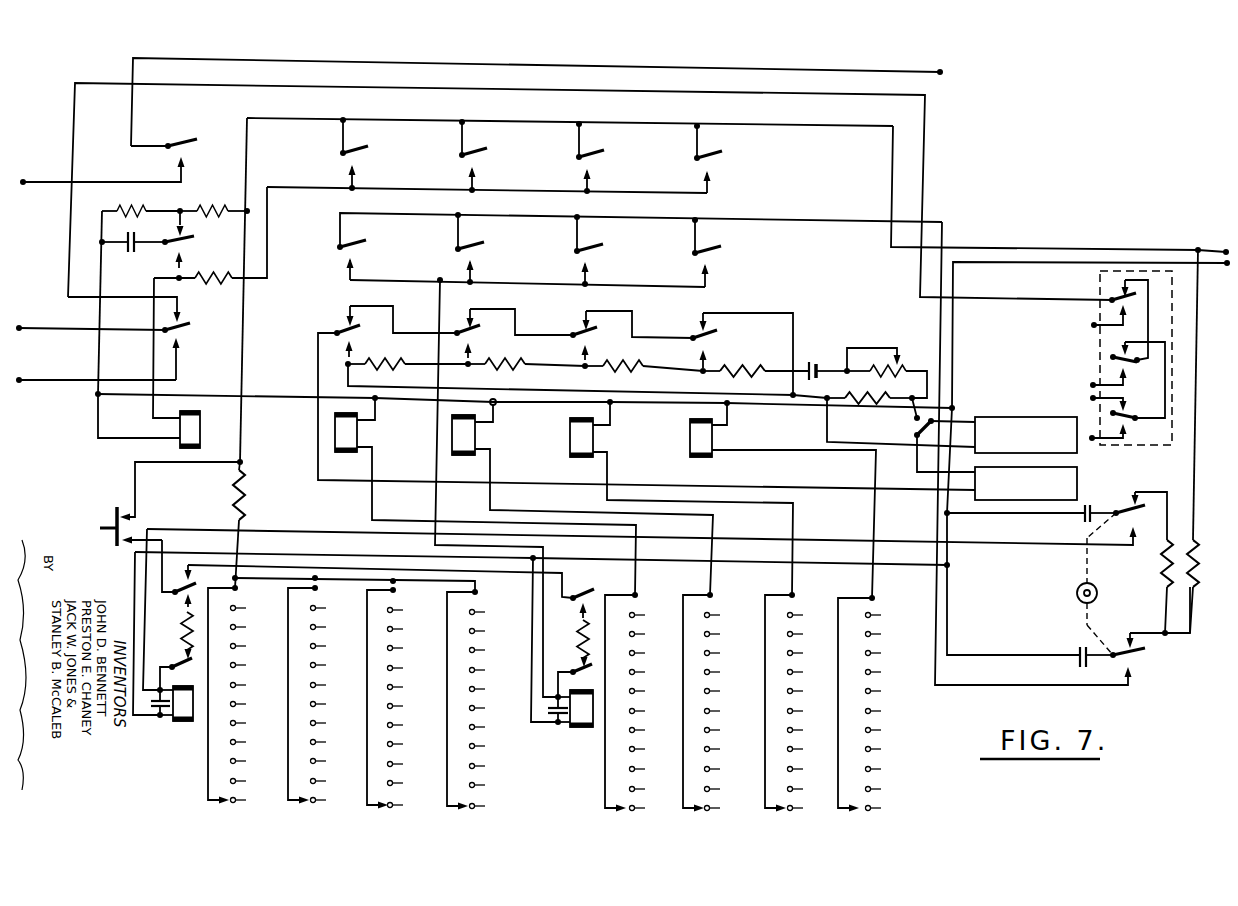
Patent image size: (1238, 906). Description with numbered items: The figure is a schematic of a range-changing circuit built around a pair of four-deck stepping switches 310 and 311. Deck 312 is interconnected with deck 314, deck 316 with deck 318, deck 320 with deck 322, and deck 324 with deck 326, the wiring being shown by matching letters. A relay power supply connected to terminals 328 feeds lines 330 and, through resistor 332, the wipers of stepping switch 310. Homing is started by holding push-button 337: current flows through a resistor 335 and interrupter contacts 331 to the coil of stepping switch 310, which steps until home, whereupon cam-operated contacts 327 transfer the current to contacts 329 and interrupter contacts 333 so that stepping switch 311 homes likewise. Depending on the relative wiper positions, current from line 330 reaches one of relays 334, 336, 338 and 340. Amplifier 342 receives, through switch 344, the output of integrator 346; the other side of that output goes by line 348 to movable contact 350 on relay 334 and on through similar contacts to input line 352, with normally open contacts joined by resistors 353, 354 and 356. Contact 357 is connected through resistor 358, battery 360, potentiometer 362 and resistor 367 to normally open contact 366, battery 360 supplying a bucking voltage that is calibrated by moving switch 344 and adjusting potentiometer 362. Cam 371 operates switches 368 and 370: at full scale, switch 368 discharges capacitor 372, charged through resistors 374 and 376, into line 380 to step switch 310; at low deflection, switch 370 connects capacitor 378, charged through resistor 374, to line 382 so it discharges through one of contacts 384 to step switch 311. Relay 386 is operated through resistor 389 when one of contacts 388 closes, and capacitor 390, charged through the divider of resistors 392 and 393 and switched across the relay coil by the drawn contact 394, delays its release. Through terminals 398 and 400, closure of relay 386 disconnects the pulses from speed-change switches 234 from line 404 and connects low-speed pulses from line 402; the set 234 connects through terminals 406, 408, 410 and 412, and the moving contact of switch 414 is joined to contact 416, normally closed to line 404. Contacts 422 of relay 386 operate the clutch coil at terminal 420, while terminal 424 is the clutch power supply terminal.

The terminal 420 is at (944, 72).
The contacts of relay 386 422 is at (168, 145).
The clutch power supply terminal 424 is at (24, 176).
The line 330 is at (243, 361).
The terminals 328 is at (1224, 252).
The contacts 388 is at (735, 166).
The contacts 384 is at (732, 255).
The line 382 is at (755, 223).
The resistor 392 is at (209, 205).
The resistor 393 is at (127, 211).
The switch contact 394 is at (190, 246).
The capacitor 390 is at (132, 255).
The resistor 389 is at (192, 280).
The relay 386 is at (198, 430).
The terminal 398 is at (19, 326).
The line 404 is at (62, 322).
The contact 416 is at (182, 321).
The terminal 400 is at (19, 378).
The line 402 is at (48, 380).
The resistor 332 is at (247, 499).
The push-button 337 is at (115, 515).
The line 380 is at (295, 531).
The cam-operated contacts 327 is at (171, 599).
The resistors 335 is at (181, 633).
The interrupter contacts 331 is at (170, 663).
The stepping switch 310 is at (183, 723).
The deck 312 is at (204, 758).
The deck 316 is at (316, 589).
The deck 320 is at (395, 591).
The deck 324 is at (476, 592).
The cam-operated contacts 329 is at (569, 606).
The interrupter contacts 333 is at (570, 671).
The stepping switch 311 is at (580, 730).
The deck 314 is at (602, 771).
The deck 318 is at (702, 594).
The deck 322 is at (784, 594).
The deck 326 is at (859, 594).
The line 348 is at (313, 450).
The movable contact 350 is at (332, 331).
The normally opened contact 366 is at (351, 346).
The resistor 353 is at (386, 361).
The resistor 354 is at (499, 362).
The resistor 356 is at (611, 364).
The contact 357 is at (714, 349).
The resistor 358 is at (737, 364).
The battery 360 is at (808, 367).
The potentiometer 362 is at (902, 353).
The resistor 367 is at (866, 394).
The input line 352 is at (823, 434).
The switch 344 is at (907, 424).
The amplifier 342 is at (1076, 451).
The integrator 346 is at (1078, 485).
The relay 334 is at (357, 434).
The relay 336 is at (475, 437).
The relay 338 is at (593, 437).
The relay 340 is at (712, 438).
The speed-change switches 234 is at (1175, 346).
The switch 414 is at (1110, 298).
The terminal 406 is at (1092, 325).
The terminal 408 is at (1091, 385).
The terminal 412 is at (1092, 398).
The terminal 410 is at (1095, 444).
The capacitor 372 is at (1080, 520).
The switch 368 is at (1092, 530).
The resistor 376 is at (1160, 561).
The resistor 374 is at (1200, 546).
The cam 371 is at (1076, 596).
The capacitor 378 is at (1078, 650).
The switch 370 is at (1145, 655).